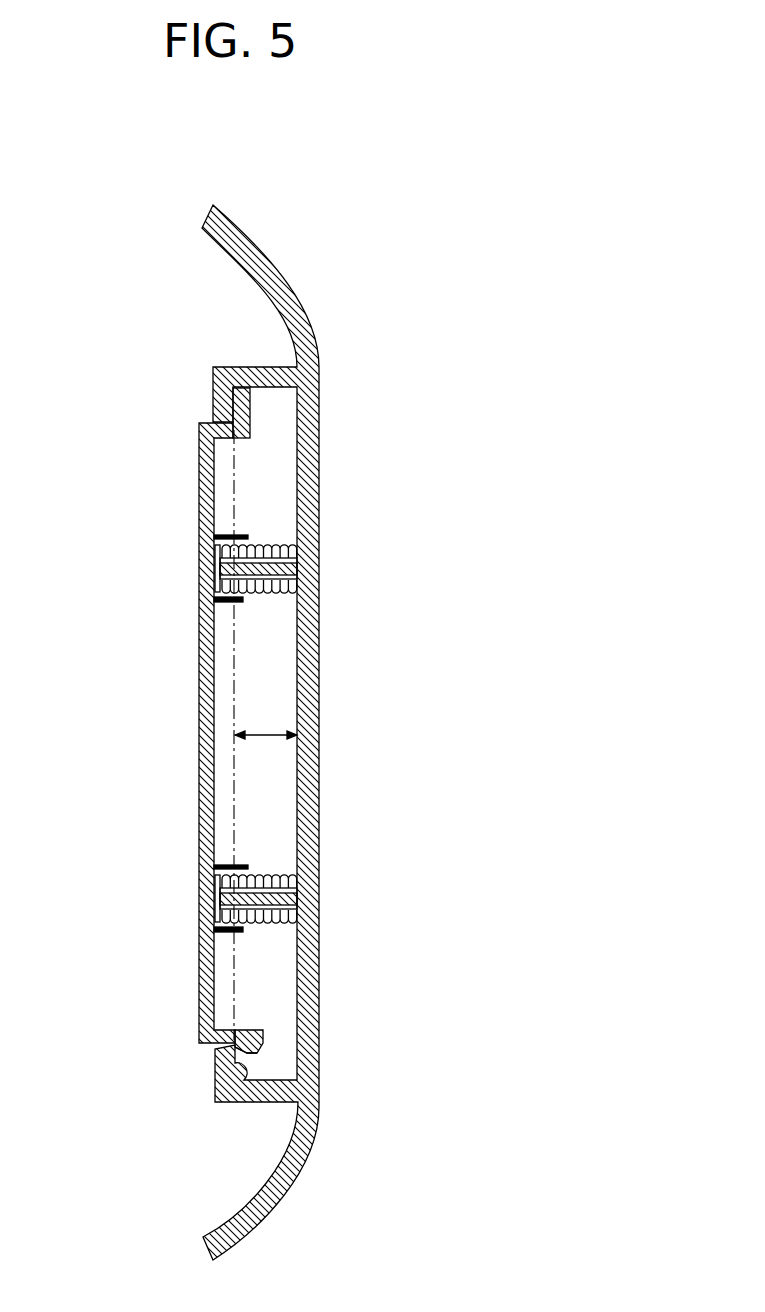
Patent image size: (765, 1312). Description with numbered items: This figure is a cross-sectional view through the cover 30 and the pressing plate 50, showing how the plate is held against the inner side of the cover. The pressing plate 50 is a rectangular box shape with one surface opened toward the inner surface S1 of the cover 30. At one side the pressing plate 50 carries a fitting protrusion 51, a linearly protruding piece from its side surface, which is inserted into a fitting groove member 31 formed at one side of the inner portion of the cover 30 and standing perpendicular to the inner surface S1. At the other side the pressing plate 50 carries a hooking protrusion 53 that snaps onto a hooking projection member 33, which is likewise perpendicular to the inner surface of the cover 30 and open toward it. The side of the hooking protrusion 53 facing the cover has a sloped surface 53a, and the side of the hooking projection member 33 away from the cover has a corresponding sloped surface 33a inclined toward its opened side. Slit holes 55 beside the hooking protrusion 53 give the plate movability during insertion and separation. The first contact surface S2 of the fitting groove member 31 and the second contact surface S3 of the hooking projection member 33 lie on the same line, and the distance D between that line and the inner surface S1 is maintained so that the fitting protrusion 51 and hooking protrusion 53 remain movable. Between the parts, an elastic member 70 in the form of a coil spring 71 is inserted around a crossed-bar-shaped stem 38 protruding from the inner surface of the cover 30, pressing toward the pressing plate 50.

The cover 30 is at (266, 732).
The fitting groove member 31 is at (266, 732).
The hooking projection member 33 is at (245, 732).
The sloped surface 33a is at (223, 1046).
The stem 38 is at (275, 582).
The pressing plate 50 is at (202, 798).
The fitting protrusion 51 is at (250, 411).
The hooking protrusion 53 is at (263, 1040).
The sloped surface 53a is at (250, 1056).
The slit hole 55 is at (224, 610).
The elastic member 70 is at (335, 557).
The coil spring 71 is at (277, 553).
The inner surface S1 is at (297, 690).
The first contact surface S2 is at (213, 408).
The second contact surface S3 is at (216, 1089).
The distance D is at (266, 725).